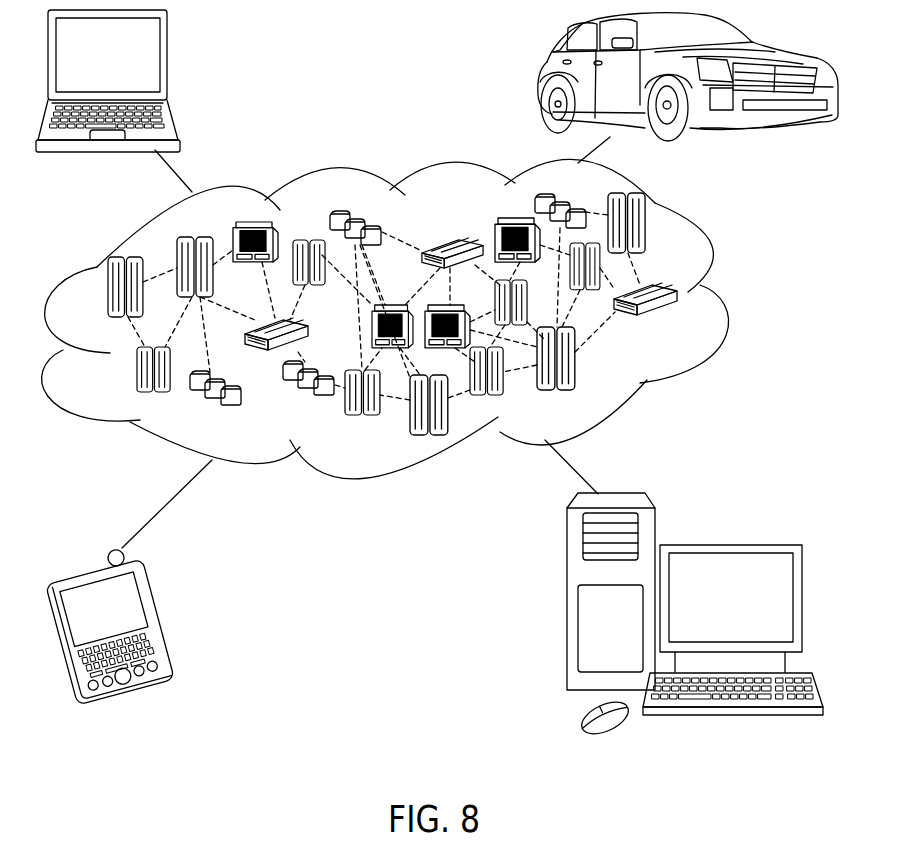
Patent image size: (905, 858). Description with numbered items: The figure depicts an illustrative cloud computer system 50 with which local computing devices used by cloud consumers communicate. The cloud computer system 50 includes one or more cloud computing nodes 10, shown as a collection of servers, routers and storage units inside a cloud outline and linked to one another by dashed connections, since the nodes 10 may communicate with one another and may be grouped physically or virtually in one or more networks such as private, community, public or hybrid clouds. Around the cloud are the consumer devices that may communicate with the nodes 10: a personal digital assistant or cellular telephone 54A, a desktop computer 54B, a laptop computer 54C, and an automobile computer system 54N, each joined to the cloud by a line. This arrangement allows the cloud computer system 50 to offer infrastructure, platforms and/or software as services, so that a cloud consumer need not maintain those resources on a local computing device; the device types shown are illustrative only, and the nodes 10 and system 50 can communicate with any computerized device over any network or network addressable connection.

The laptop computer 54C is at (168, 62).
The automobile computer system 54N is at (543, 75).
The personal digital assistant or cellular telephone 54A is at (157, 620).
The desktop computer 54B is at (727, 545).
The cloud computer system 50 is at (732, 297).
The cloud computing nodes 10 is at (686, 324).